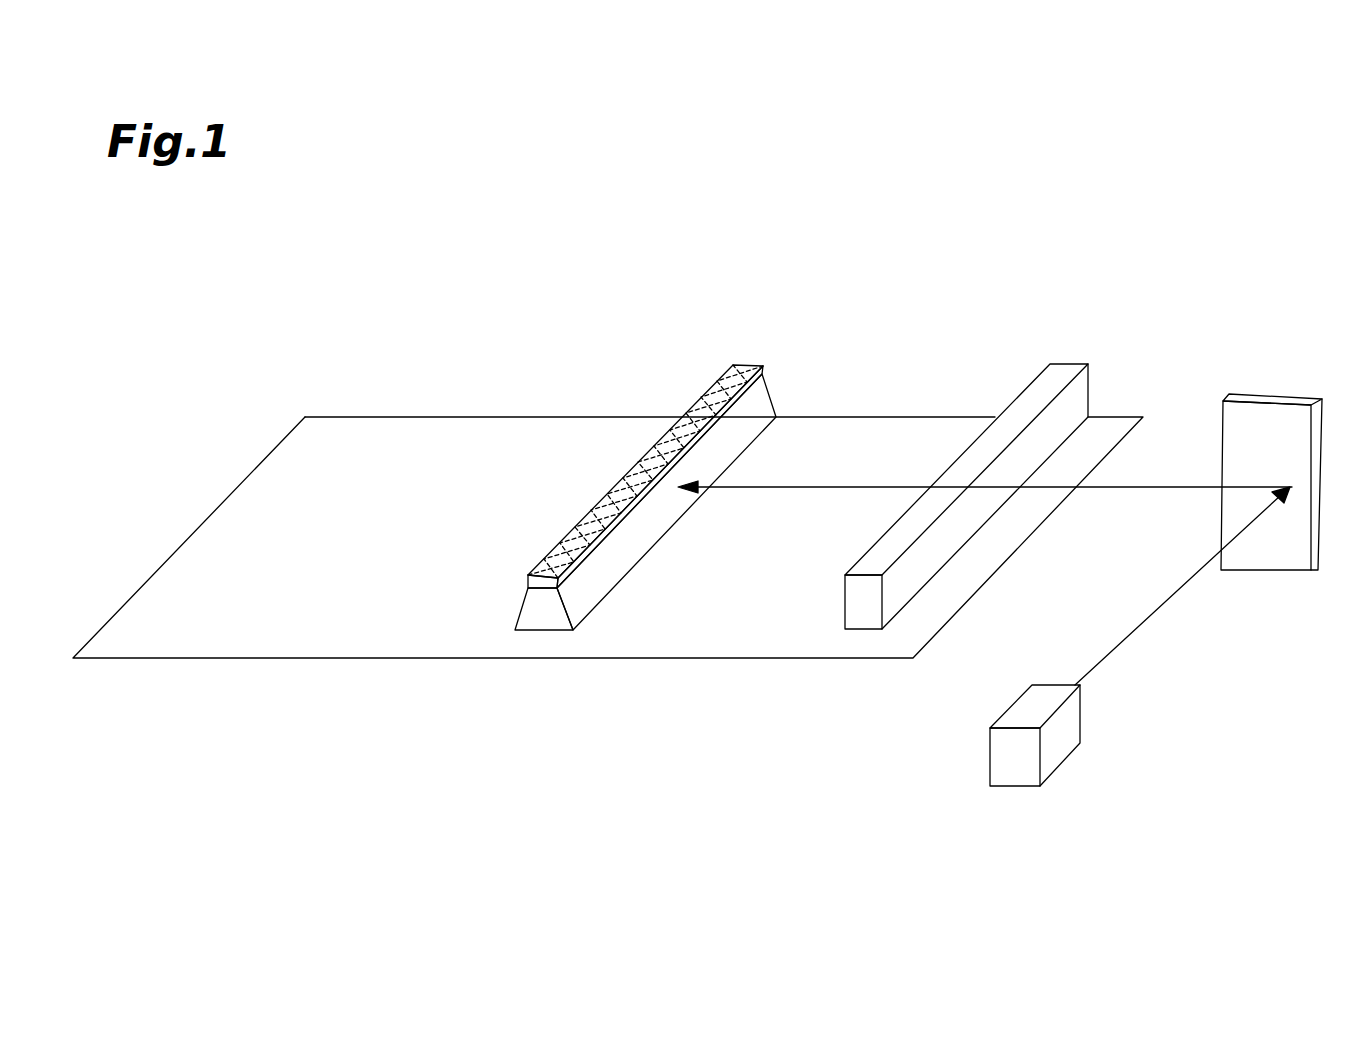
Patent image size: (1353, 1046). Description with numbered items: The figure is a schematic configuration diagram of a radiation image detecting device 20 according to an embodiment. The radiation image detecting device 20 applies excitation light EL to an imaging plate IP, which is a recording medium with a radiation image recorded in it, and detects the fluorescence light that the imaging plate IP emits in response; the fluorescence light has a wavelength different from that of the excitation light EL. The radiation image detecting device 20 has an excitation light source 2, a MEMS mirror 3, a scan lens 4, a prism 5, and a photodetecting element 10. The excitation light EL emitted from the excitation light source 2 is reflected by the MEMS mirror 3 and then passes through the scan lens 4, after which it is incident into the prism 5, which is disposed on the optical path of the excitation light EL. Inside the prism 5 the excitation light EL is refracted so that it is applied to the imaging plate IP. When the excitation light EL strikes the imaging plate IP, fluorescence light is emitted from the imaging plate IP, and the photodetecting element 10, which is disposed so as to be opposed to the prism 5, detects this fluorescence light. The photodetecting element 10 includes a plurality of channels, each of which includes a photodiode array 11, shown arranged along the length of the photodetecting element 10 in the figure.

The excitation light source 2 is at (1060, 745).
The MEMS mirror 3 is at (1268, 413).
The scan lens 4 is at (1067, 363).
The prism 5 is at (535, 650).
The photodetecting element 10 is at (750, 356).
The photodiode array 11 is at (694, 405).
The radiation image detecting device 20 is at (891, 222).
The imaging plate IP is at (395, 437).
The excitation light EL is at (1150, 487).